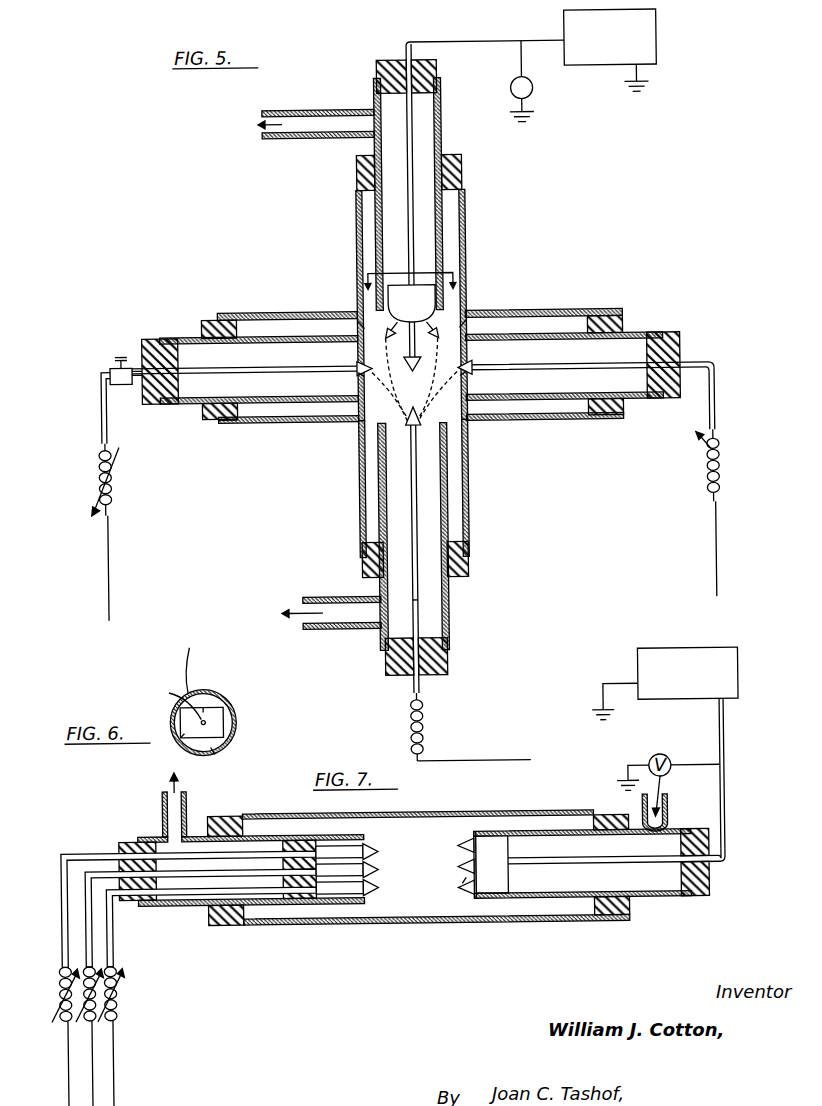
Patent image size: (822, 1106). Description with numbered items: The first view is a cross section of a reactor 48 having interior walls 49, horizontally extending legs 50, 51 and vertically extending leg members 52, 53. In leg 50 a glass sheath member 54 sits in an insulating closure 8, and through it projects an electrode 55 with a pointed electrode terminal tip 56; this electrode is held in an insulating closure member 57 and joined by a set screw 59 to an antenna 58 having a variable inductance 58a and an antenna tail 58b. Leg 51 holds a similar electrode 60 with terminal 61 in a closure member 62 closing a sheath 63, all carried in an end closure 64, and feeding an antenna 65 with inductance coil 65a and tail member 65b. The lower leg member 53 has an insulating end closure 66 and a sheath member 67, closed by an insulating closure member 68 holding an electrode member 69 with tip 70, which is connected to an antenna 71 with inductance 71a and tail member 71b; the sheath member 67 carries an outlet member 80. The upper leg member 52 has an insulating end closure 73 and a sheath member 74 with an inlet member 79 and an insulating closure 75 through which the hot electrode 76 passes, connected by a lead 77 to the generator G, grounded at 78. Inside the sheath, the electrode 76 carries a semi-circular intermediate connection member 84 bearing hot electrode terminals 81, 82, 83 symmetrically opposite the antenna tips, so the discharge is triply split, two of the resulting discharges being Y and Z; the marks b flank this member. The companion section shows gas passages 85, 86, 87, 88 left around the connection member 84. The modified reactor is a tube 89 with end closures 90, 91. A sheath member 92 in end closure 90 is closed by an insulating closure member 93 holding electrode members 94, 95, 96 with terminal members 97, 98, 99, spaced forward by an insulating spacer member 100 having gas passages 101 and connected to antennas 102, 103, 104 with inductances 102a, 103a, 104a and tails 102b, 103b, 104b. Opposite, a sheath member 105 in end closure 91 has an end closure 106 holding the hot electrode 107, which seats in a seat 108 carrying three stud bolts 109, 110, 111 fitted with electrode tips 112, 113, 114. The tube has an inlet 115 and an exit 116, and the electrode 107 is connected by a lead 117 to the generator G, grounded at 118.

In FIG. 5, the insulating closure 8 is at (222, 420).
In FIG. 5, the reactor 48 is at (298, 304).
In FIG. 5, the interior walls 49 is at (244, 318).
In FIG. 5, the horizontally extending leg 50 is at (300, 421).
In FIG. 5, the horizontally extending leg 51 is at (532, 421).
In FIG. 5, the vertically extending leg member 52 is at (467, 222).
In FIG. 5, the vertically extending leg member 53 is at (467, 494).
In FIG. 5, the sheath member 54 is at (200, 418).
In FIG. 5, the electrode 55 is at (270, 370).
In FIG. 5, the pointed electrode terminal tip 56 is at (359, 378).
In FIG. 5, the insulating closure member 57 is at (150, 342).
In FIG. 5, the antenna 58 is at (101, 412).
In FIG. 5, the variable inductance 58a is at (98, 472).
In FIG. 5, the antenna tail 58b is at (106, 545).
In FIG. 5, the set screw 59 is at (118, 357).
In FIG. 5, the electrode 60 is at (582, 366).
In FIG. 5, the electrode tip 61 is at (478, 369).
In FIG. 5, the closure member 62 is at (681, 343).
In FIG. 5, the sheath 63 is at (530, 318).
In FIG. 5, the end closure 64 is at (610, 418).
In FIG. 5, the antenna 65 is at (717, 415).
In FIG. 5, the inductance coil 65a is at (720, 478).
In FIG. 5, the tail member 65b is at (716, 522).
In FIG. 5, the insulating end closure 66 is at (468, 566).
In FIG. 5, the sheath member 67 is at (380, 500).
In FIG. 5, the insulating closure member 68 is at (446, 662).
In FIG. 5, the electrode member 69 is at (418, 606).
In FIG. 5, the electrode terminal tip 70 is at (405, 416).
In FIG. 5, the antenna 71 is at (408, 684).
In FIG. 5, the inductance 71a is at (421, 722).
In FIG. 5, the tail member 71b is at (484, 761).
In FIG. 5, the insulating end closure 73 is at (359, 166).
In FIG. 5, the sheath member 74 is at (448, 129).
In FIG. 6, the sheath member 74 is at (193, 659).
In FIG. 5, the insulating closure 75 is at (392, 60).
In FIG. 5, the electrode 76 is at (410, 192).
In FIG. 6, the electrode 76 is at (177, 700).
In FIG. 5, the lead 77 is at (483, 40).
In FIG. 5, the ground 78 is at (652, 90).
In FIG. 5, the inlet member 79 is at (313, 117).
In FIG. 5, the outlet member 80 is at (321, 596).
In FIG. 5, the hot electrode terminal 81 is at (360, 318).
In FIG. 5, the hot electrode terminal 82 is at (421, 369).
In FIG. 5, the hot electrode terminal 83 is at (470, 318).
In FIG. 5, the intermediate connection member 84 is at (432, 290).
In FIG. 6, the intermediate connection member 84 is at (224, 705).
In FIG. 6, the gas passage 85 is at (207, 746).
In FIG. 6, the gas passage 86 is at (200, 702).
In FIG. 6, the gas passage 87 is at (176, 735).
In FIG. 6, the gas passage 88 is at (232, 720).
In FIG. 7, the reaction tube 89 is at (437, 803).
In FIG. 7, the end closure 90 is at (224, 818).
In FIG. 7, the end closure 91 is at (600, 818).
In FIG. 7, the sheath member 92 is at (236, 924).
In FIG. 7, the insulating closure member 93 is at (133, 900).
In FIG. 7, the electrode member 94 is at (252, 845).
In FIG. 7, the electrode member 95 is at (280, 862).
In FIG. 7, the electrode member 96 is at (268, 924).
In FIG. 7, the terminal member 97 is at (365, 849).
In FIG. 7, the terminal member 98 is at (366, 869).
In FIG. 7, the terminal member 99 is at (366, 887).
In FIG. 7, the insulating spacer member 100 is at (298, 897).
In FIG. 7, the gas passages 101 is at (312, 890).
In FIG. 7, the antenna 102 is at (56, 904).
In FIG. 7, the inductance 102a is at (54, 980).
In FIG. 7, the tail 102b is at (60, 1070).
In FIG. 7, the antenna 103 is at (79, 922).
In FIG. 7, the inductance 103a is at (96, 988).
In FIG. 7, the tail 103b is at (86, 1069).
In FIG. 7, the antenna 104 is at (110, 950).
In FIG. 7, the inductance 104a is at (117, 1022).
In FIG. 7, the tail 104b is at (107, 1098).
In FIG. 7, the sheath member 105 is at (590, 918).
In FIG. 7, the end closure 106 is at (705, 893).
In FIG. 7, the hot electrode 107 is at (662, 872).
In FIG. 7, the seat 108 is at (491, 838).
In FIG. 7, the stud bolt 109 is at (473, 834).
In FIG. 7, the stud bolt 110 is at (456, 884).
In FIG. 7, the stud bolt 111 is at (482, 898).
In FIG. 7, the electrode tip 112 is at (460, 845).
In FIG. 7, the electrode tip 113 is at (456, 866).
In FIG. 7, the electrode tip 114 is at (462, 897).
In FIG. 7, the inlet 115 is at (663, 814).
In FIG. 7, the exit 116 is at (157, 804).
In FIG. 7, the lead 117 is at (722, 733).
In FIG. 7, the ground 118 is at (608, 716).
In FIG. 5, the generator G is at (661, 40).
In FIG. 7, the generator G is at (735, 686).
In FIG. 5, the discharge Y is at (402, 381).
In FIG. 5, the discharge Z is at (470, 355).
In FIG. 5, the connection b is at (412, 290).